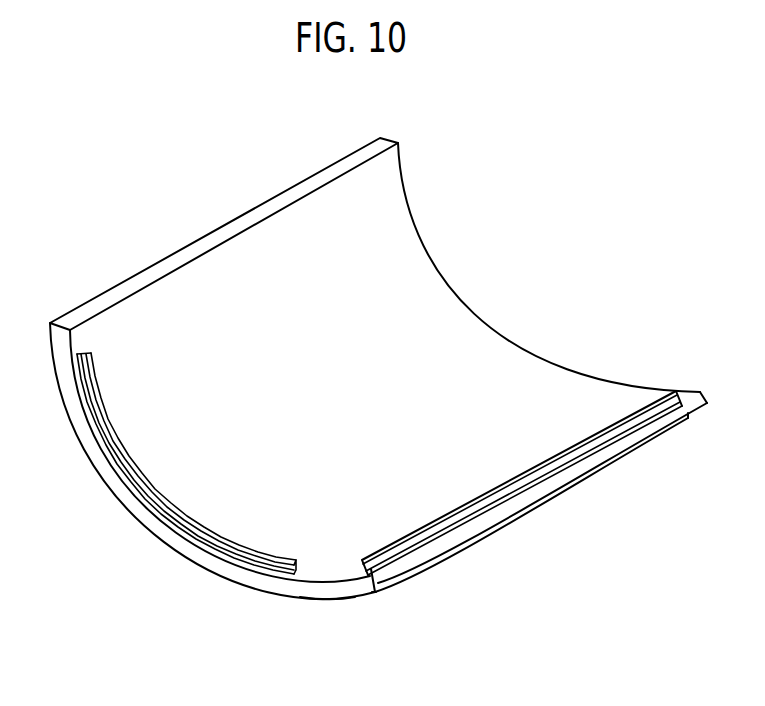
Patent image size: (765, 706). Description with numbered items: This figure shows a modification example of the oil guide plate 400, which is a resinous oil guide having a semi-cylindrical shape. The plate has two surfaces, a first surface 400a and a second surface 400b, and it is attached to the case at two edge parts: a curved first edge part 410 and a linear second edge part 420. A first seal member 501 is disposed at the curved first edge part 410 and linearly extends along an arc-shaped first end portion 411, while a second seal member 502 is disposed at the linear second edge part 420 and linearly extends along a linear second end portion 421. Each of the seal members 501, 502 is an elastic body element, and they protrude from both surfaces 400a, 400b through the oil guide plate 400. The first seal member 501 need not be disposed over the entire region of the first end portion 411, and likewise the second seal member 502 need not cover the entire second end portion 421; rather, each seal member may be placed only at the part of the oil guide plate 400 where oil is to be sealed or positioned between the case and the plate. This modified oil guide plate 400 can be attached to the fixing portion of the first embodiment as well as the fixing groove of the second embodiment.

The oil guide plate 400 is at (322, 169).
The surface 400a is at (497, 348).
The surface 400b is at (347, 599).
The first edge part 410 is at (108, 377).
The first end portion 411 is at (168, 533).
The second edge part 420 is at (616, 413).
The second end portion 421 is at (513, 503).
The first seal member 501 is at (157, 483).
The second seal member 502 is at (570, 450).